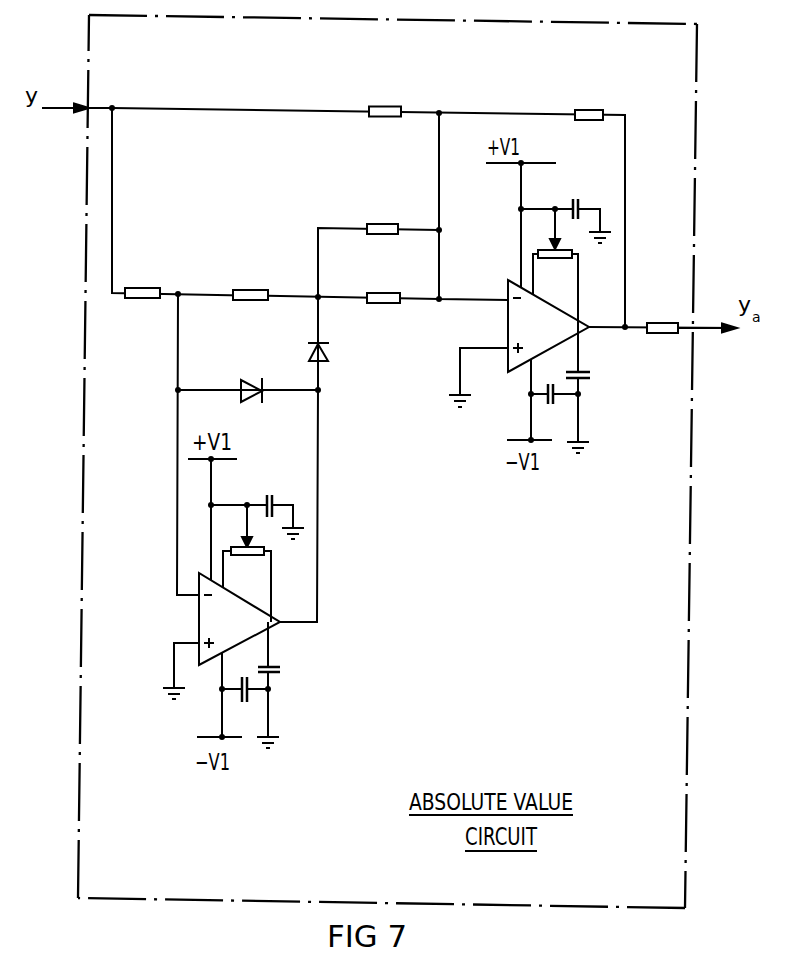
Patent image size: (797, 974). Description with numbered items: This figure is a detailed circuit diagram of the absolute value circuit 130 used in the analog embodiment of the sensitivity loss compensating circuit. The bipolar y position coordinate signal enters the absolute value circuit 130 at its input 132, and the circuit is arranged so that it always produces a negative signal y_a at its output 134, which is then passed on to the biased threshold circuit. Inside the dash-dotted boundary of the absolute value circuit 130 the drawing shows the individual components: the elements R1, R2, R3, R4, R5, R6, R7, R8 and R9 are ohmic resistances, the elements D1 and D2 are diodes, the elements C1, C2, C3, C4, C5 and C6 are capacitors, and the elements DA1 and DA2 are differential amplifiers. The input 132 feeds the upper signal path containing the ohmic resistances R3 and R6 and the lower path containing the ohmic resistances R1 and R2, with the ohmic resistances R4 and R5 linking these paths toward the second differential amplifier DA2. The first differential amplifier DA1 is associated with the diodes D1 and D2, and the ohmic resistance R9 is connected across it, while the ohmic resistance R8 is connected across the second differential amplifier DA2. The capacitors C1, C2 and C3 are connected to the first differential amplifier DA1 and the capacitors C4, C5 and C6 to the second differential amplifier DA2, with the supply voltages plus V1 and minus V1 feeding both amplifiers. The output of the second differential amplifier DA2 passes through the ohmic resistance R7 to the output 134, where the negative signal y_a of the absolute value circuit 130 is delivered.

The absolute value circuit 130 is at (685, 630).
The input 132 is at (84, 116).
The output 134 is at (696, 332).
The ohmic resistance R1 is at (142, 289).
The ohmic resistance R2 is at (242, 290).
The ohmic resistance R3 is at (383, 107).
The ohmic resistance R4 is at (383, 224).
The ohmic resistance R5 is at (381, 294).
The ohmic resistance R6 is at (587, 110).
The ohmic resistance R7 is at (660, 323).
The ohmic resistance R8 is at (562, 262).
The ohmic resistance R9 is at (250, 558).
The capacitor C1 is at (272, 495).
The capacitor C2 is at (271, 666).
The capacitor C3 is at (252, 695).
The capacitor C4 is at (581, 203).
The capacitor C5 is at (582, 370).
The capacitor C6 is at (556, 398).
The diode D1 is at (331, 355).
The diode D2 is at (244, 386).
The differential amplifier DA1 is at (210, 620).
The differential amplifier DA2 is at (522, 323).